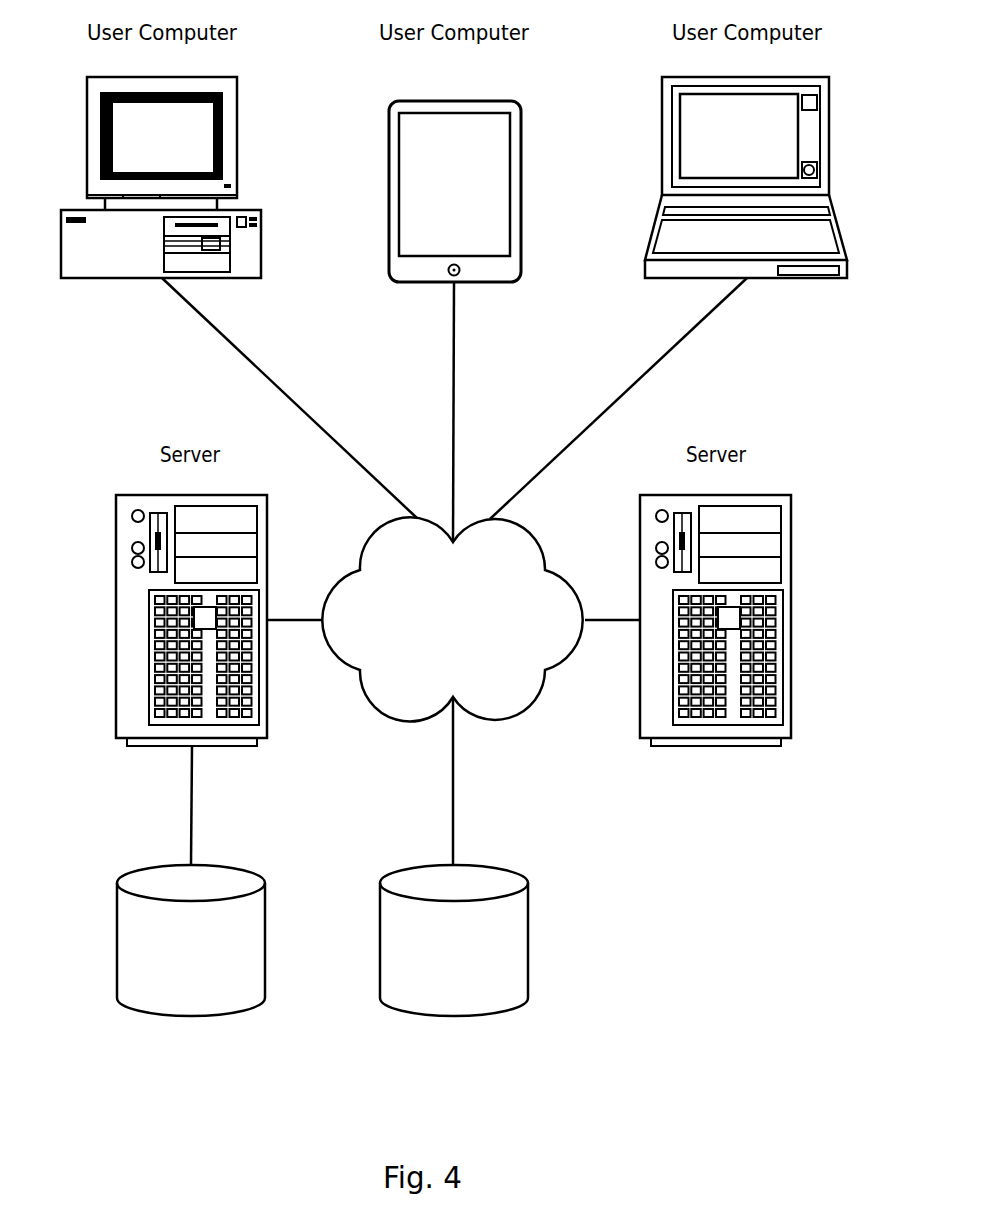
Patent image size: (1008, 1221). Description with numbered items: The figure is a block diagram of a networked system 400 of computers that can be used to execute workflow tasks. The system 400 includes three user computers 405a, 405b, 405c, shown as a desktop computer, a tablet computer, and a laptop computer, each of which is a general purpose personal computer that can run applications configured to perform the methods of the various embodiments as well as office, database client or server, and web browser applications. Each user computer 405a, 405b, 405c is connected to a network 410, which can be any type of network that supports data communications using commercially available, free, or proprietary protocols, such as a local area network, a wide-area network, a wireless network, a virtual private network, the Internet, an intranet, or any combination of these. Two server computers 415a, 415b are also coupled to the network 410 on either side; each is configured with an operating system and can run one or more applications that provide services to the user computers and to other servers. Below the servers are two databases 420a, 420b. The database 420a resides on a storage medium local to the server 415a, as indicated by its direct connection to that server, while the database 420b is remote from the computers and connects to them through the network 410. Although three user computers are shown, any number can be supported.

The system 400 is at (700, 1064).
The user computer 405a is at (261, 227).
The user computer 405b is at (388, 192).
The user computer 405c is at (661, 178).
The network 410 is at (490, 720).
The server computer 415a is at (116, 620).
The server computer 415b is at (792, 620).
The database 420a is at (190, 1017).
The database 420b is at (453, 1017).